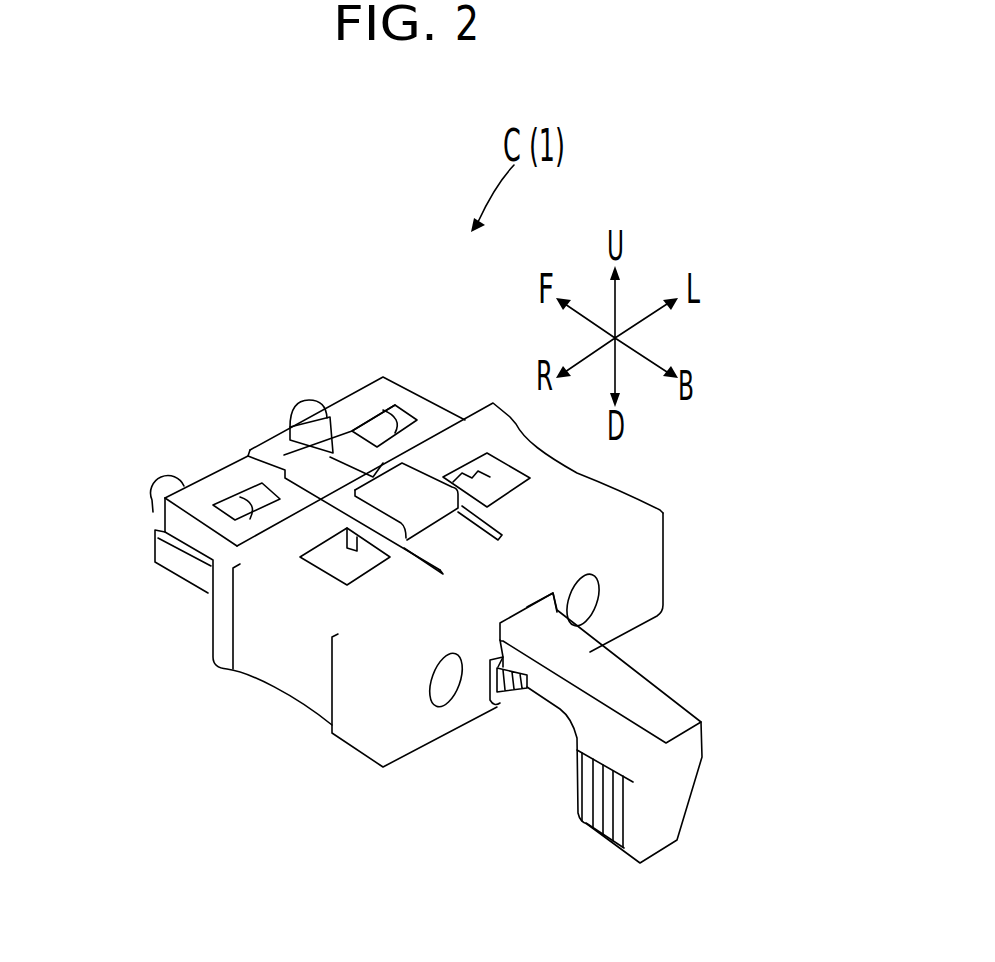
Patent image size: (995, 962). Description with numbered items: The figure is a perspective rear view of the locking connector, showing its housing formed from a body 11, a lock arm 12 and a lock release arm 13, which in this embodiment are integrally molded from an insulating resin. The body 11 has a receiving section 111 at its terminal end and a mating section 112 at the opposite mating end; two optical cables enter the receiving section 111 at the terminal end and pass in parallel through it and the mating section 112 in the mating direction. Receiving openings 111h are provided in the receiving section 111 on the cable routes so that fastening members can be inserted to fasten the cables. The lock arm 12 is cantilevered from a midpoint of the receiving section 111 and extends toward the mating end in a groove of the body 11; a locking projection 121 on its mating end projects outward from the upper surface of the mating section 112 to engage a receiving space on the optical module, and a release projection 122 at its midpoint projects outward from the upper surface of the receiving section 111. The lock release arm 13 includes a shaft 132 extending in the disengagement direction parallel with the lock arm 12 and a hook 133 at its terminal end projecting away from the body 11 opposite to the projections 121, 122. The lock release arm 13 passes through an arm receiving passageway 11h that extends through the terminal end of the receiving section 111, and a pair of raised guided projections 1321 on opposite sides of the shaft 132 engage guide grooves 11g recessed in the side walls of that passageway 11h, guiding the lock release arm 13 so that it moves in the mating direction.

The body 11 is at (419, 607).
The receiving section 111 is at (260, 613).
The mating section 112 is at (197, 538).
The receiving openings 111h is at (347, 550).
The arm receiving passageway 11h is at (552, 612).
The guide grooves 11g is at (500, 700).
The lock arm 12 is at (376, 426).
The locking projection 121 is at (308, 425).
The release projection 122 is at (413, 478).
The lock release arm 13 is at (646, 768).
The shaft 132 is at (617, 682).
The hook 133 is at (640, 815).
The guided projections 1321 is at (510, 695).